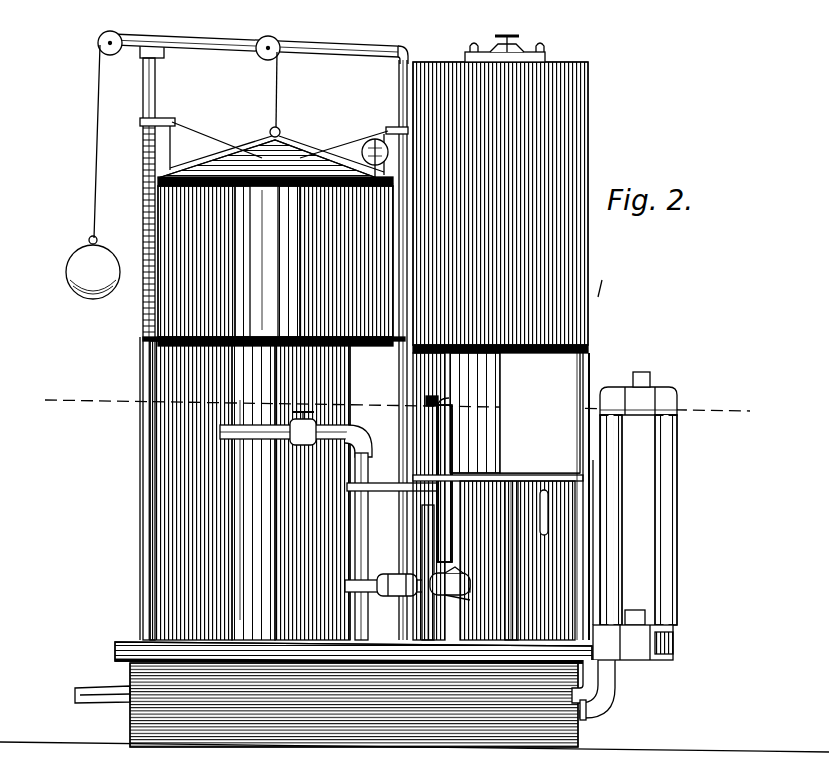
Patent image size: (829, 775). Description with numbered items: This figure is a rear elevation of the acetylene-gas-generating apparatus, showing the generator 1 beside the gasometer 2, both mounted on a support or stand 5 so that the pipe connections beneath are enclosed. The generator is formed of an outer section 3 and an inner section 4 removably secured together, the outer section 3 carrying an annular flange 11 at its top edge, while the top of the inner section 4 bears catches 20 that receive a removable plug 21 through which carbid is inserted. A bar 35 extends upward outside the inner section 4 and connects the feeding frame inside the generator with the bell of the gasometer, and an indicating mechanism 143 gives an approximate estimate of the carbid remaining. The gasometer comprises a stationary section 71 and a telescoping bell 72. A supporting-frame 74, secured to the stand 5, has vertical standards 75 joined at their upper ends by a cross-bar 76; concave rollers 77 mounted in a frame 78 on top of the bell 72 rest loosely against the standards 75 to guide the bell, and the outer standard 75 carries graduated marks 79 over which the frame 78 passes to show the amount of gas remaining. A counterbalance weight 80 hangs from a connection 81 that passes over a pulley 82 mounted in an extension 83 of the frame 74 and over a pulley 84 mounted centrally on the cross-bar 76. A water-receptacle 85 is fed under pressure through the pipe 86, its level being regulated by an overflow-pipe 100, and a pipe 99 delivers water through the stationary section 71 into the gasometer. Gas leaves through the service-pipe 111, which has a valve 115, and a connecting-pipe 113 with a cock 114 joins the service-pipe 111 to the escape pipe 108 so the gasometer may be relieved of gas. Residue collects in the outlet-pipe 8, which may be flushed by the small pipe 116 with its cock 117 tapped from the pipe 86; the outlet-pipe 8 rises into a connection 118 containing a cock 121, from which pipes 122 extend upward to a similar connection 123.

The generator 1 is at (600, 288).
The gasometer 2 is at (396, 394).
The outer section 3 is at (590, 372).
The inner section 4 is at (590, 247).
The support or stand 5 is at (460, 748).
The outlet-pipe 8 is at (596, 720).
The annular flange 11 is at (590, 345).
The catches 20 is at (470, 47).
The removable plug 21 is at (512, 46).
The bar 35 is at (378, 139).
The stationary section 71 is at (254, 510).
The bell or telescoping section 72 is at (275, 243).
The supporting-frame 74 is at (143, 460).
The vertical standards 75 is at (400, 80).
The cross-bar 76 is at (335, 48).
The concave rollers 77 is at (162, 118).
The frame 78 is at (180, 124).
The graduated marks 79 is at (143, 193).
The weight 80 is at (85, 295).
The connection 81 is at (95, 150).
The pulley 82 is at (114, 32).
The extension 83 is at (133, 52).
The pulley 84 is at (278, 40).
The water-receptacle 85 is at (540, 413).
The pipe 86 is at (445, 531).
The pipe 99 is at (347, 493).
The overflow-pipe 100 is at (510, 572).
The pipe 108 is at (445, 606).
The service-pipe 111 is at (322, 466).
The connecting-pipe 113 is at (380, 586).
The cock 114 is at (390, 650).
The valve 115 is at (296, 419).
The small pipe 116 is at (466, 581).
The cock 117 is at (476, 598).
The connection 118 is at (674, 644).
The cock 121 is at (651, 382).
The pipes 122 is at (678, 541).
The connection 123 is at (678, 407).
The indicating mechanism 143 is at (282, 133).